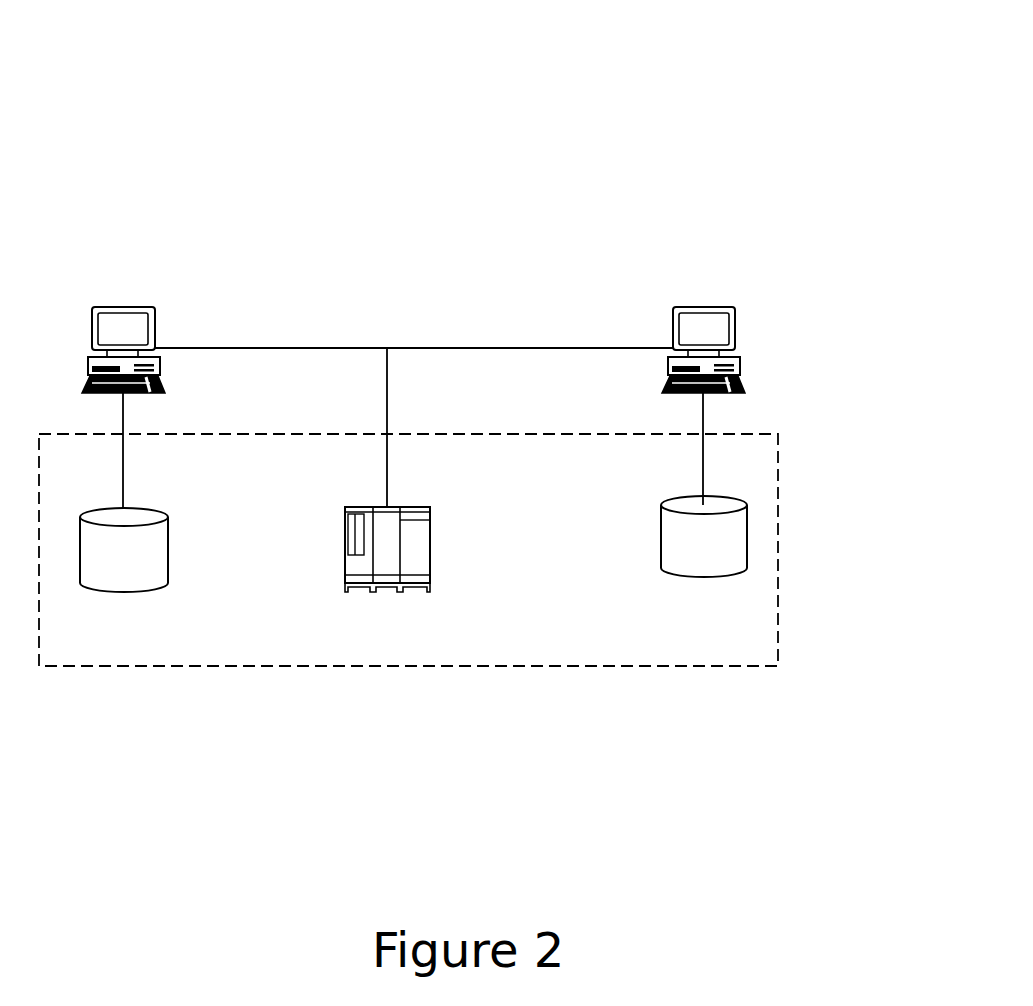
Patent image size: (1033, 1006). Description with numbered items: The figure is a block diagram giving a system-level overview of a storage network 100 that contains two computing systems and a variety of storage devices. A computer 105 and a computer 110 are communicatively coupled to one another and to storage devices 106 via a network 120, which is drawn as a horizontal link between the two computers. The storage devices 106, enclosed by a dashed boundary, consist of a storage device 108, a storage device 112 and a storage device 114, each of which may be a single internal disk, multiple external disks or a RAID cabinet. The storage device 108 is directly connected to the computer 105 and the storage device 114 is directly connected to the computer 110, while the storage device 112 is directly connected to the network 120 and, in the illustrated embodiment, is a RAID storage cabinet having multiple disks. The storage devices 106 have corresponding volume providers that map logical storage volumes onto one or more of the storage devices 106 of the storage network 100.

The storage network 100 is at (584, 148).
The computer 105 is at (143, 340).
The computer 110 is at (724, 340).
The network 120 is at (463, 347).
The storage devices 106 is at (760, 434).
The storage device 108 is at (143, 562).
The storage device 112 is at (420, 549).
The storage device 114 is at (723, 551).